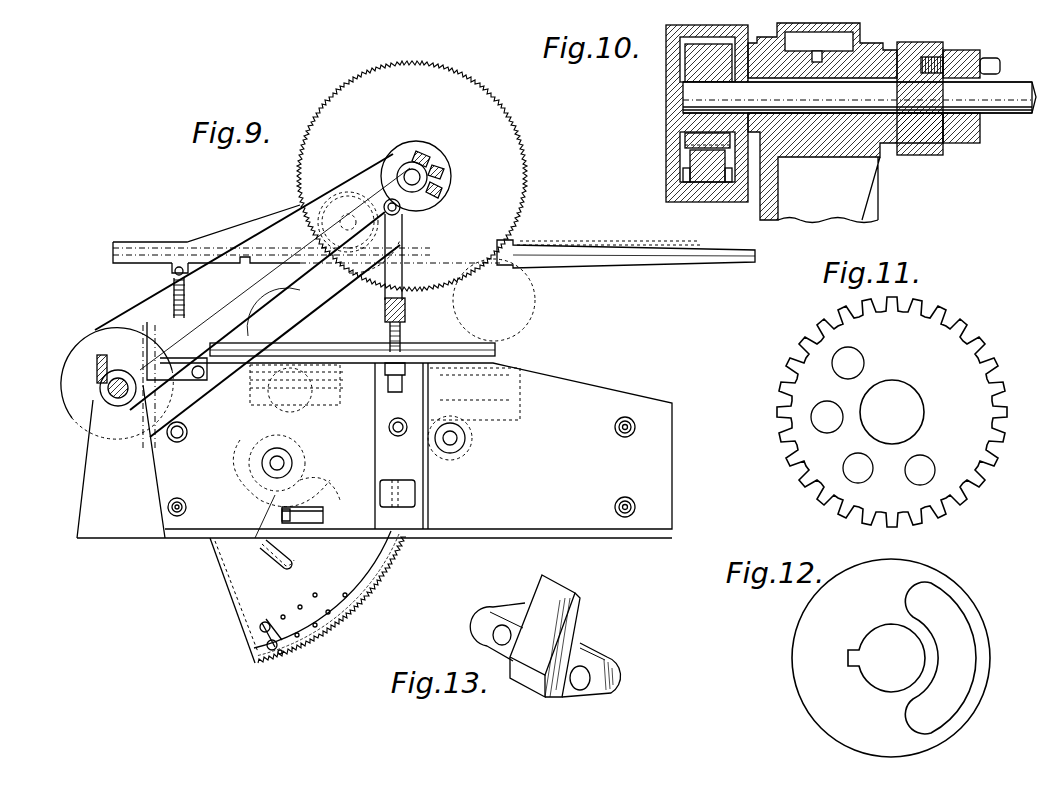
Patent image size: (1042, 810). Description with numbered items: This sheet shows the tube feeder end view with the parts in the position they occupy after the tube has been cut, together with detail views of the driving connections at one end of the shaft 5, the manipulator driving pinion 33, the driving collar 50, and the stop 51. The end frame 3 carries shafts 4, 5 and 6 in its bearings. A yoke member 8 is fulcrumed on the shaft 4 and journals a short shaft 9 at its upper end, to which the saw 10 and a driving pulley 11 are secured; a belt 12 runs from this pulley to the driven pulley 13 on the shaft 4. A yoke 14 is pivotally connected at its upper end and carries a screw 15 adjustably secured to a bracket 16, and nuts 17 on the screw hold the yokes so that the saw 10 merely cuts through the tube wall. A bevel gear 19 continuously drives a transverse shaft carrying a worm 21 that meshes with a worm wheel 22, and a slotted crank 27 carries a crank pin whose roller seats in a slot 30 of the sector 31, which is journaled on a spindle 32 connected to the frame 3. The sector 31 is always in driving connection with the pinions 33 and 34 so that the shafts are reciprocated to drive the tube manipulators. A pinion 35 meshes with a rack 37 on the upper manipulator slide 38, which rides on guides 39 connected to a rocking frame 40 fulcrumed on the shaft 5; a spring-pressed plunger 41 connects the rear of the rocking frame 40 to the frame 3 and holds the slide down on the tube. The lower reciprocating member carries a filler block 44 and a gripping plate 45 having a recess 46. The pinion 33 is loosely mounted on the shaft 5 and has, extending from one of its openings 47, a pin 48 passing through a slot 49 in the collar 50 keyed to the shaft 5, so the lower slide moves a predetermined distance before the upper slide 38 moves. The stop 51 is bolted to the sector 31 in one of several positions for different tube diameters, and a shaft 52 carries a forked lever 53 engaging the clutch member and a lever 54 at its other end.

In FIG. 9, the frame 3 is at (374, 450).
In FIG. 10, the frame 3 is at (826, 212).
In FIG. 9, the shaft 4 is at (108, 388).
In FIG. 9, the shaft 5 is at (370, 215).
In FIG. 10, the shaft 5 is at (1000, 86).
In FIG. 9, the shaft 6 is at (450, 446).
In FIG. 9, the yoke member 8 is at (265, 324).
In FIG. 9, the short shaft 9 is at (430, 172).
In FIG. 9, the saw 10 is at (412, 176).
In FIG. 9, the driving pulley 11 is at (400, 152).
In FIG. 9, the belt 12 is at (352, 177).
In FIG. 9, the driven pulley 13 is at (104, 345).
In FIG. 9, the yoke 14 is at (402, 270).
In FIG. 9, the screw 15 is at (403, 330).
In FIG. 9, the bracket 16 is at (428, 370).
In FIG. 9, the nuts 17 is at (392, 372).
In FIG. 9, the bevel gear 19 is at (140, 418).
In FIG. 9, the worm 21 is at (290, 365).
In FIG. 9, the worm wheel 22 is at (378, 490).
In FIG. 9, the slotted crank 27 is at (252, 530).
In FIG. 9, the slot 30 is at (268, 564).
In FIG. 9, the sector 31 is at (363, 598).
In FIG. 9, the spindle 32 is at (160, 452).
In FIG. 9, the pinion 33 is at (305, 200).
In FIG. 10, the pinion 33 is at (922, 42).
In FIG. 11, the pinion 33 is at (892, 412).
In FIG. 9, the pinion 34 is at (470, 450).
In FIG. 10, the pinion 35 is at (683, 70).
In FIG. 9, the rack 37 is at (560, 243).
In FIG. 9, the upper manipulator slide 38 is at (615, 250).
In FIG. 10, the upper manipulator slide 38 is at (708, 184).
In FIG. 10, the guides 39 is at (683, 176).
In FIG. 9, the rocking frame 40 is at (238, 235).
In FIG. 10, the rocking frame 40 is at (710, 26).
In FIG. 9, the spring-pressed plunger 41 is at (172, 283).
In FIG. 9, the filler block 44 is at (497, 350).
In FIG. 9, the gripping plate 45 is at (320, 372).
In FIG. 9, the recess 46 is at (207, 357).
In FIG. 10, the openings 47 is at (937, 58).
In FIG. 11, the openings 47 is at (835, 380).
In FIG. 10, the pin 48 is at (993, 60).
In FIG. 10, the slot 49 is at (968, 52).
In FIG. 12, the slot 49 is at (940, 658).
In FIG. 10, the collar 50 is at (973, 142).
In FIG. 12, the collar 50 is at (891, 658).
In FIG. 9, the stop 51 is at (270, 622).
In FIG. 13, the stop 51 is at (553, 630).
In FIG. 9, the shaft 52 is at (312, 524).
In FIG. 9, the forked lever 53 is at (284, 463).
In FIG. 9, the lever 54 is at (320, 490).